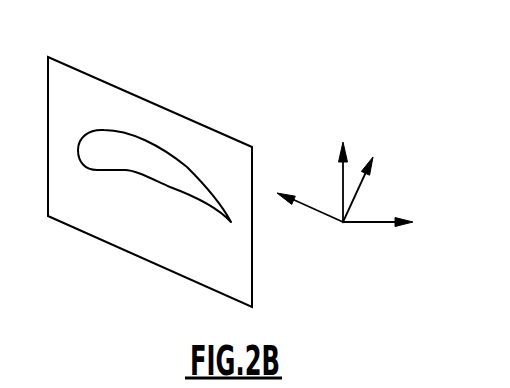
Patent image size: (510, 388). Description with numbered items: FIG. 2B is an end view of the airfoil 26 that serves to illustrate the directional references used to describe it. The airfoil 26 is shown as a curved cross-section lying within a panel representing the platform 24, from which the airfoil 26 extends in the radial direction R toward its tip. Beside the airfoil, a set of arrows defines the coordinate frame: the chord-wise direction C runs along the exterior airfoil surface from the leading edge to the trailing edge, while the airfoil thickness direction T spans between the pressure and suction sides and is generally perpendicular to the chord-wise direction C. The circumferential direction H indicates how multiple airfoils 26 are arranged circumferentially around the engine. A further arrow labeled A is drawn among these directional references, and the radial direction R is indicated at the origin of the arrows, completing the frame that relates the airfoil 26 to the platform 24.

The platform 24 is at (98, 78).
The airfoil 26 is at (155, 142).
The circumferential direction H is at (343, 168).
The airfoil thickness direction T is at (365, 184).
The axial direction axis A is at (386, 222).
The chord-wise direction C is at (310, 195).
The radial direction R is at (343, 222).